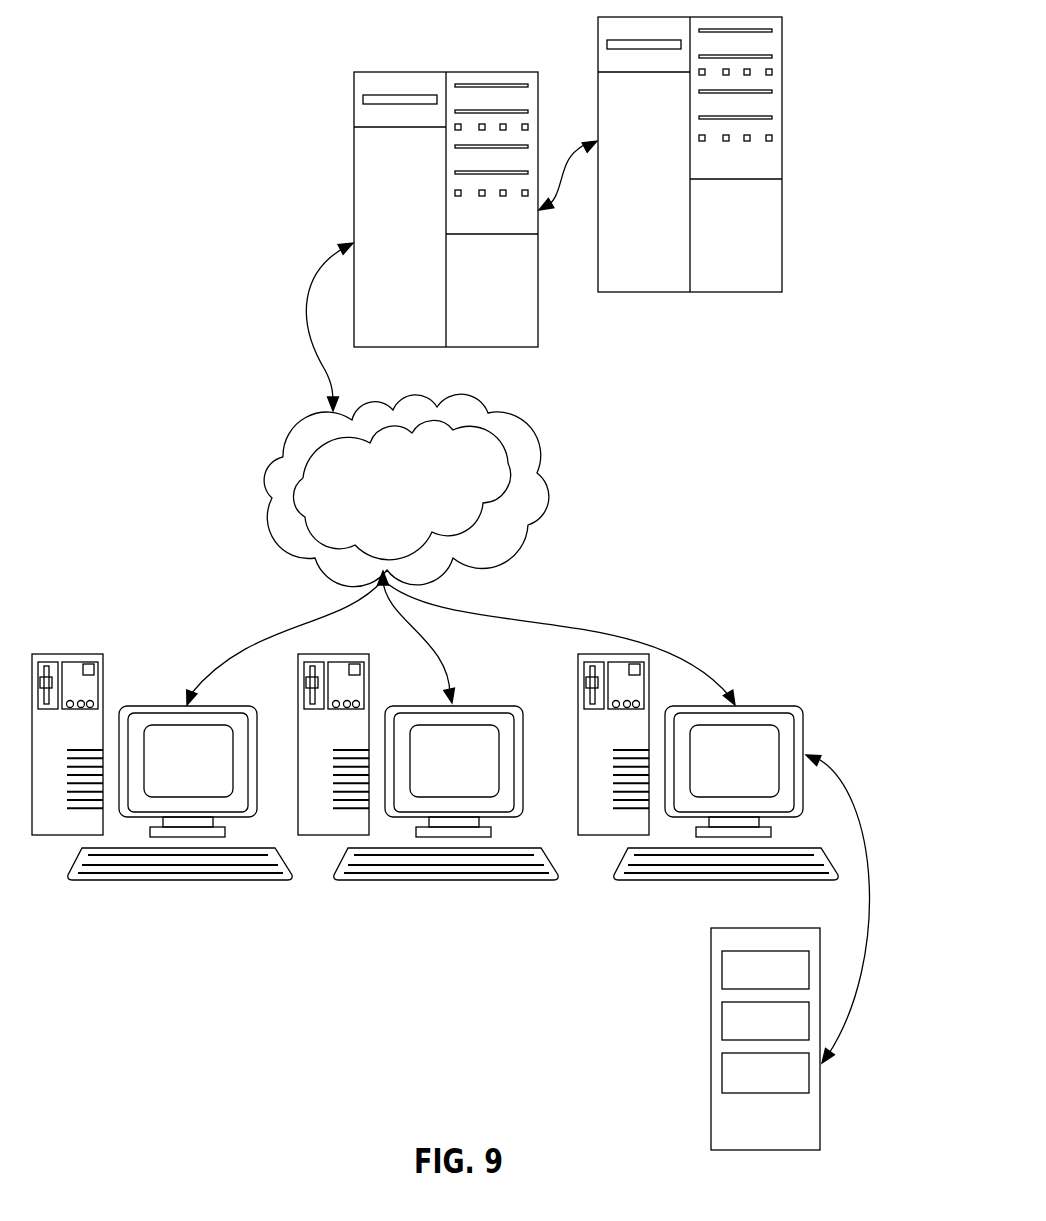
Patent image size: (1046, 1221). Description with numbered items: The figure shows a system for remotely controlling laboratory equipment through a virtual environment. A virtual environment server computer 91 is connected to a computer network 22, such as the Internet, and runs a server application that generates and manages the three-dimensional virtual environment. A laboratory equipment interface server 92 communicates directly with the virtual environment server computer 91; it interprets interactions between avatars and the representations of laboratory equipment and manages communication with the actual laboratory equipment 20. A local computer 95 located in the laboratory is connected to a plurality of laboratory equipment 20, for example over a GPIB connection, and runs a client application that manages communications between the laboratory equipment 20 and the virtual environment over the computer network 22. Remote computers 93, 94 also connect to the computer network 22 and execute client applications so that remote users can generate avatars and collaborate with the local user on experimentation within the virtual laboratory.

The virtual environment server computer 91 is at (513, 347).
The laboratory equipment interface server 92 is at (757, 293).
The computer network 22 is at (543, 513).
The remote computer 93 is at (203, 878).
The remote computer 94 is at (462, 878).
The local computer 95 is at (737, 878).
The laboratory equipment 20 is at (713, 1057).